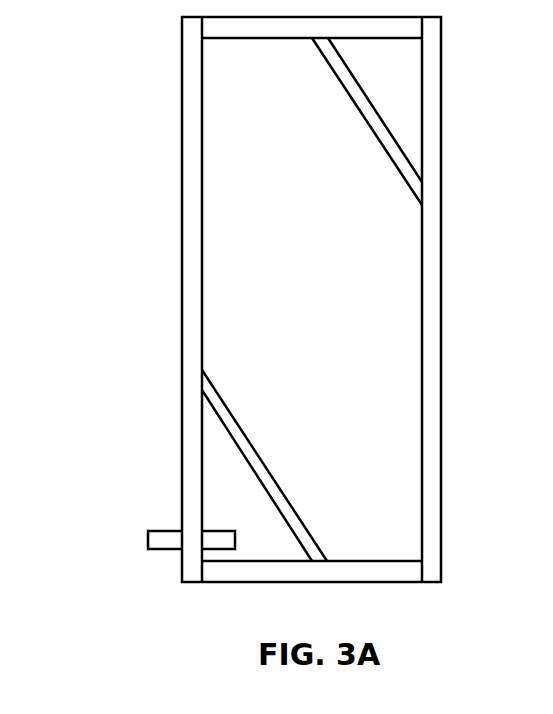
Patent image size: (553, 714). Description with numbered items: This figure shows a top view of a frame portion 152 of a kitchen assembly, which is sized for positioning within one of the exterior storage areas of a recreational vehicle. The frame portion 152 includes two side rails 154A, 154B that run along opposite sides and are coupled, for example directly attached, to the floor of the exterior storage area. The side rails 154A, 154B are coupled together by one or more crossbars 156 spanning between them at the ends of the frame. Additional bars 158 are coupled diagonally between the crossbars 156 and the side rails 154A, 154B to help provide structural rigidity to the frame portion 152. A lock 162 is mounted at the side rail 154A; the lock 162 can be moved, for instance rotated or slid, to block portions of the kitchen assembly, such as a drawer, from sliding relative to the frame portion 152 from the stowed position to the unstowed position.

The frame portion 152 is at (140, 146).
The side rail 154A is at (192, 300).
The side rail 154B is at (433, 320).
The crossbar 156 is at (232, 30).
The additional bar 158 is at (237, 432).
The lock 162 is at (148, 541).